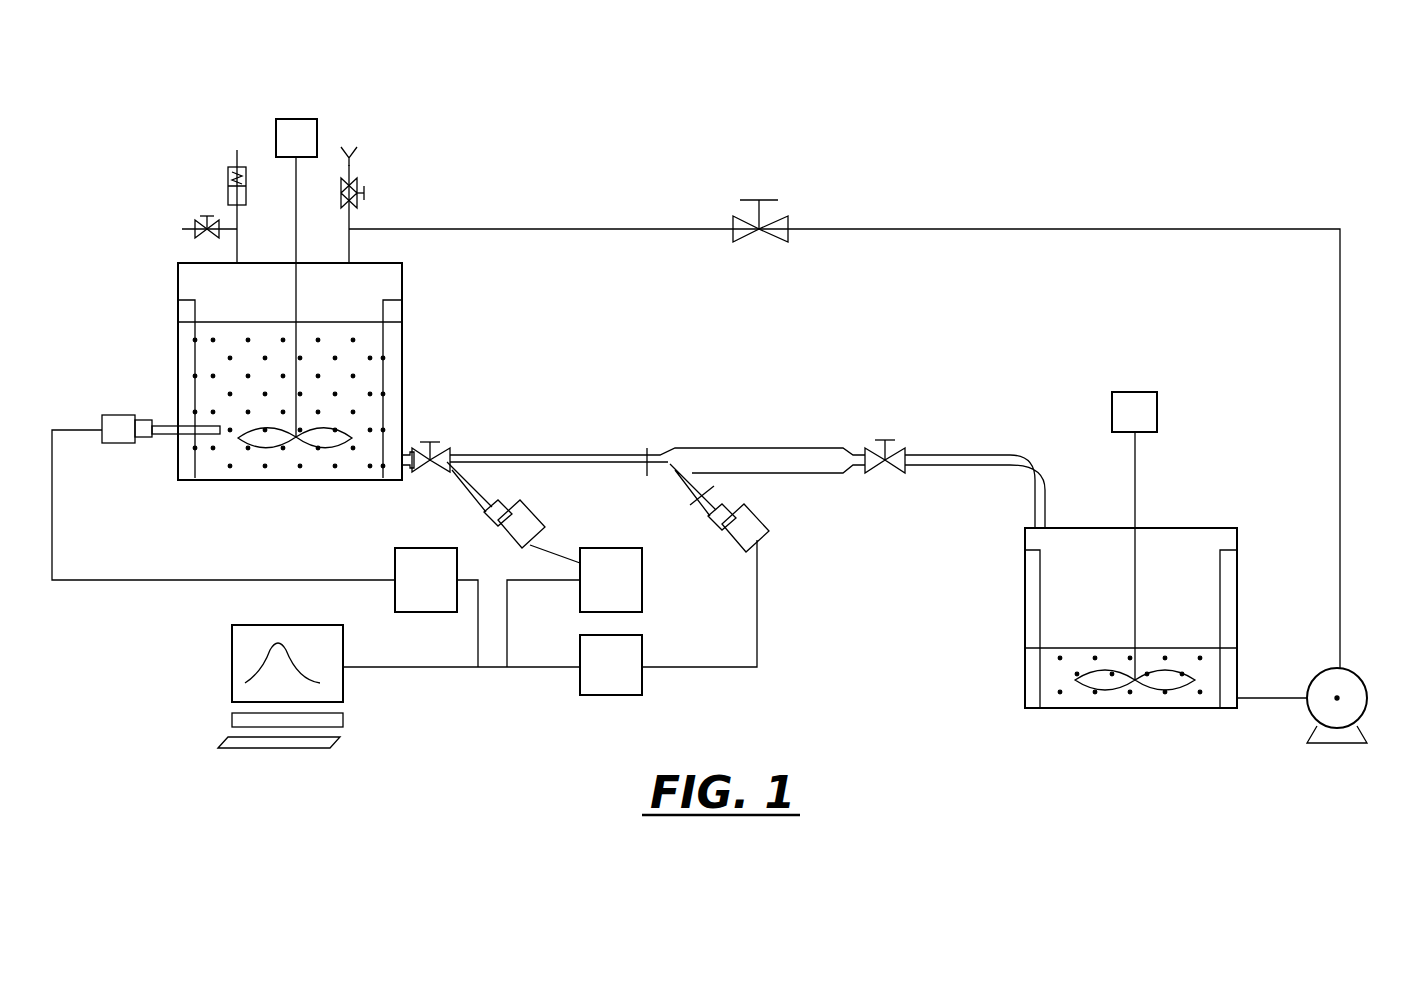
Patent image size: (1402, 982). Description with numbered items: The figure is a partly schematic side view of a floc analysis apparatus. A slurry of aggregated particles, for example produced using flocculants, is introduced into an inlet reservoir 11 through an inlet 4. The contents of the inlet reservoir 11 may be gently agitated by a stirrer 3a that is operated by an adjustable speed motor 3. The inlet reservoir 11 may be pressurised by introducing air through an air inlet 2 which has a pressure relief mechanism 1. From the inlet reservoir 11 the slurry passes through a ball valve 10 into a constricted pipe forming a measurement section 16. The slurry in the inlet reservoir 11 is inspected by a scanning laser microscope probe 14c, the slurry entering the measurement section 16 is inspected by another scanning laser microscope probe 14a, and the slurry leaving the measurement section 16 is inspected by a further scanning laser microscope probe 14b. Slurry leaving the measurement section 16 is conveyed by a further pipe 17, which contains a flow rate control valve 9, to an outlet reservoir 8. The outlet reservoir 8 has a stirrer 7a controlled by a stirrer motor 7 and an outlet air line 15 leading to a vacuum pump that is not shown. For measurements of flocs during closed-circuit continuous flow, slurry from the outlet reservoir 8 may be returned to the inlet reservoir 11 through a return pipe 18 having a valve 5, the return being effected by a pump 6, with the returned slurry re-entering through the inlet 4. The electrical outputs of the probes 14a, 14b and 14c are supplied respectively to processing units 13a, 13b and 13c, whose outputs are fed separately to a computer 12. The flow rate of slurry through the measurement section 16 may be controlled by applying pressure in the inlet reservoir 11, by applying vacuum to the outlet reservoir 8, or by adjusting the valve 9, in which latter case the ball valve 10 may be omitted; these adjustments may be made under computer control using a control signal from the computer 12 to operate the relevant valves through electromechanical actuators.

The pressure relief mechanism 1 is at (237, 195).
The air inlet 2 is at (209, 214).
The adjustable speed motor 3 is at (296, 191).
The stirrer 3a is at (296, 290).
The inlet 4 is at (352, 194).
The valve 5 is at (760, 206).
The pump 6 is at (1350, 680).
The stirrer motor 7 is at (1134, 460).
The stirrer 7a is at (1135, 553).
The outlet reservoir 8 is at (1131, 651).
The flow rate control valve 9 is at (955, 469).
The ball valve 10 is at (426, 442).
The inlet reservoir 11 is at (290, 371).
The computer 12 is at (280, 686).
The processing unit 13a is at (574, 607).
The processing unit 13b is at (492, 665).
The processing unit 13c is at (436, 607).
The scanning laser microscope probe 14a is at (525, 522).
The scanning laser microscope probe 14b is at (735, 545).
The scanning laser microscope probe 14c is at (112, 418).
The outlet air line 15 is at (1205, 528).
The measurement section 16 is at (594, 455).
The further pipe 17 is at (818, 464).
The return pipe 18 is at (1341, 473).